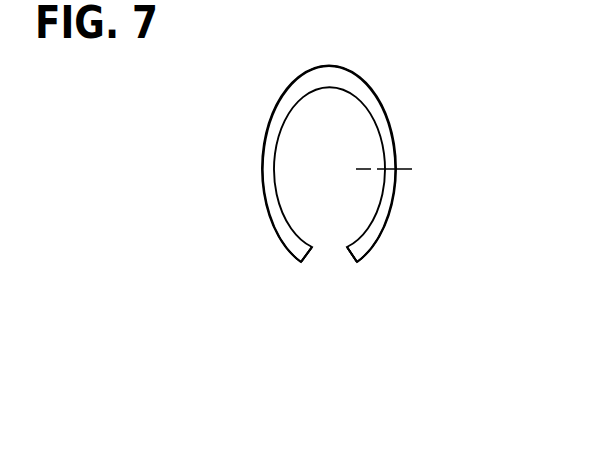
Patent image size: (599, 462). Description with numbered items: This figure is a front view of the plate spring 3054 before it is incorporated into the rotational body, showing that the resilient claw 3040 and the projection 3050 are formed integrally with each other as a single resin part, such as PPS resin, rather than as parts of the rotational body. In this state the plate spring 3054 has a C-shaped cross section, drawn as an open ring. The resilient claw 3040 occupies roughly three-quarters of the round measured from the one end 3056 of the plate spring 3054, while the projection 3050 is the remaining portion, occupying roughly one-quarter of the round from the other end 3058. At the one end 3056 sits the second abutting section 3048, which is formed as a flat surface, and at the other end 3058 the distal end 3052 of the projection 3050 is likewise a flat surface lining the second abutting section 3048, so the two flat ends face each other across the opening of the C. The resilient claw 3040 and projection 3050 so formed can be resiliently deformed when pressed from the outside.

The resilient claw 3040 is at (268, 168).
The second abutting section 3048 is at (309, 254).
The projection 3050 is at (386, 207).
The distal end 3052 is at (347, 254).
The plate spring 3054 is at (367, 65).
The one end 3056 is at (309, 254).
The other end 3058 is at (347, 254).